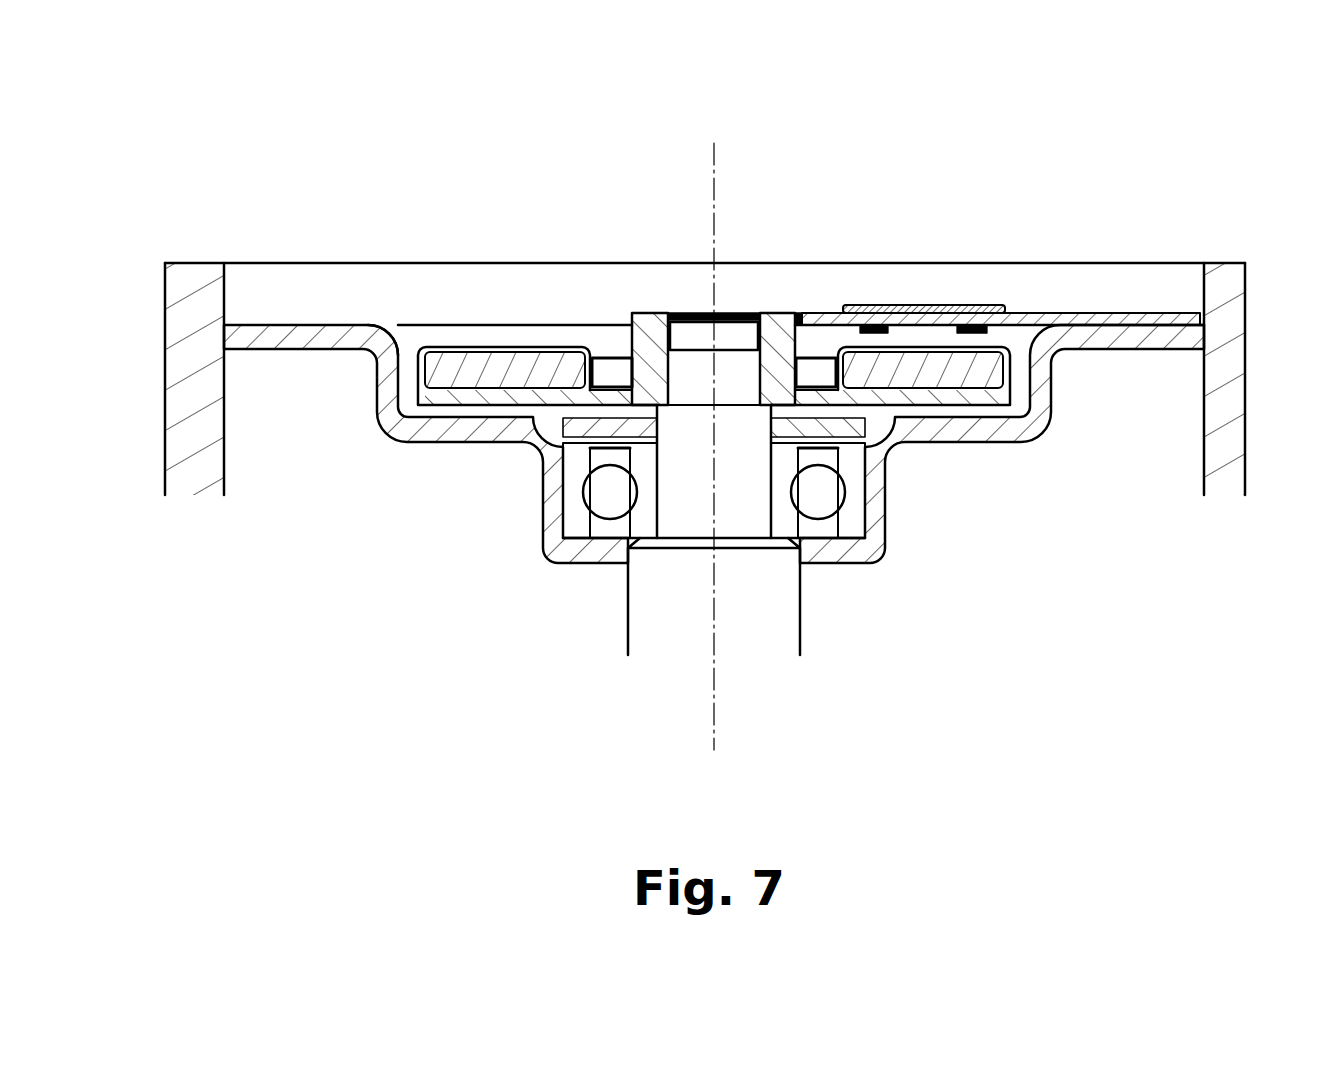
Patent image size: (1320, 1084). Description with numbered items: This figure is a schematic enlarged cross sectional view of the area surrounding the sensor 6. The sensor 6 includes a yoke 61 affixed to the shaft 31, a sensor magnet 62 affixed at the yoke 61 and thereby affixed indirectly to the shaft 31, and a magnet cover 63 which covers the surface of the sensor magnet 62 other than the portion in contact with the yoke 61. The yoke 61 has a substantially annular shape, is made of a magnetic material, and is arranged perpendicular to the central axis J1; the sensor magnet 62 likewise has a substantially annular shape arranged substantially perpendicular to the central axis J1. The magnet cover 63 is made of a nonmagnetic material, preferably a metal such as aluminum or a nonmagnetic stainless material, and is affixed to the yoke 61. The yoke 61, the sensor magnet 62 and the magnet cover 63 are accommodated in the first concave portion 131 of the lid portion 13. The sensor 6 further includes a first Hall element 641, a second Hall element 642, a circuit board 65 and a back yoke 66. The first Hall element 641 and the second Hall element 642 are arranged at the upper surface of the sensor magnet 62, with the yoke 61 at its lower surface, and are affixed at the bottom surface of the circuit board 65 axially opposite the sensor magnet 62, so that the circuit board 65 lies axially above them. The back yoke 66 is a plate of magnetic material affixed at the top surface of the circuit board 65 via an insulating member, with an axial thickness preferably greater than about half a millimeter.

The sensor 6 is at (707, 239).
The lid portion 13 is at (270, 333).
The first concave portion 131 is at (412, 330).
The shaft 31 is at (670, 485).
The yoke 61 is at (570, 397).
The sensor magnet 62 is at (527, 370).
The magnet cover 63 is at (463, 345).
The circuit board 65 is at (1045, 313).
The back yoke 66 is at (900, 305).
The first Hall element 641 is at (870, 333).
The second Hall element 642 is at (972, 333).
The central axis J1 is at (714, 178).